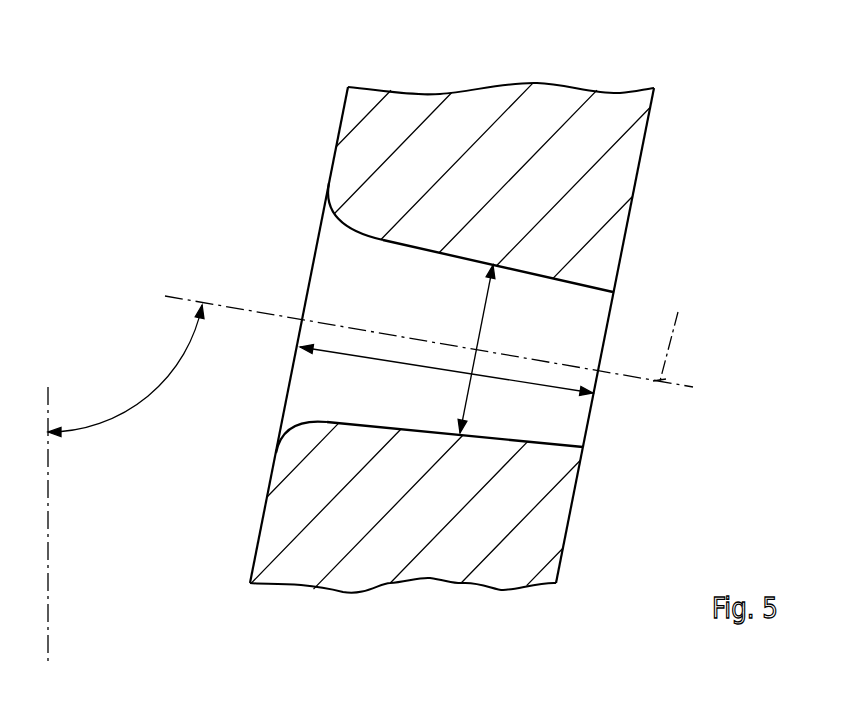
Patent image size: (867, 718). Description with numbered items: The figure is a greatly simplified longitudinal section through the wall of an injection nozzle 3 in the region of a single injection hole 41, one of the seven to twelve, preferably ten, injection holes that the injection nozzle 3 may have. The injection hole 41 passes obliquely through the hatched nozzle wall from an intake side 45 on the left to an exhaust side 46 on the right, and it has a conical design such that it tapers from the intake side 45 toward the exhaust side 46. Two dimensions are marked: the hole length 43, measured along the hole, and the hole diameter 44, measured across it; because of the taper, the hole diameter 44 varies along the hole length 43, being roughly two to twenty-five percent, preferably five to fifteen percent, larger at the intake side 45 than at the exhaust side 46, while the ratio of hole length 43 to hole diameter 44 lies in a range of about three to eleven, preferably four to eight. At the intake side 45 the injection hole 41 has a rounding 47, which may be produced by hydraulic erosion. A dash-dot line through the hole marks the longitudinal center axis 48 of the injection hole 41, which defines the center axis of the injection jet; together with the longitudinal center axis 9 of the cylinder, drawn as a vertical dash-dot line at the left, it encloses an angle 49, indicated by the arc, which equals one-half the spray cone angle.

The injection nozzle 3 is at (709, 192).
The longitudinal center axis of the cylinder 9 is at (48, 518).
The injection hole 41 is at (600, 321).
The hole length 43 is at (415, 366).
The hole diameter 44 is at (483, 310).
The intake side 45 is at (311, 277).
The exhaust side 46 is at (593, 412).
The rounding 47 is at (340, 217).
The longitudinal center axis of the injection hole 48 is at (432, 335).
The angle 49 is at (148, 395).